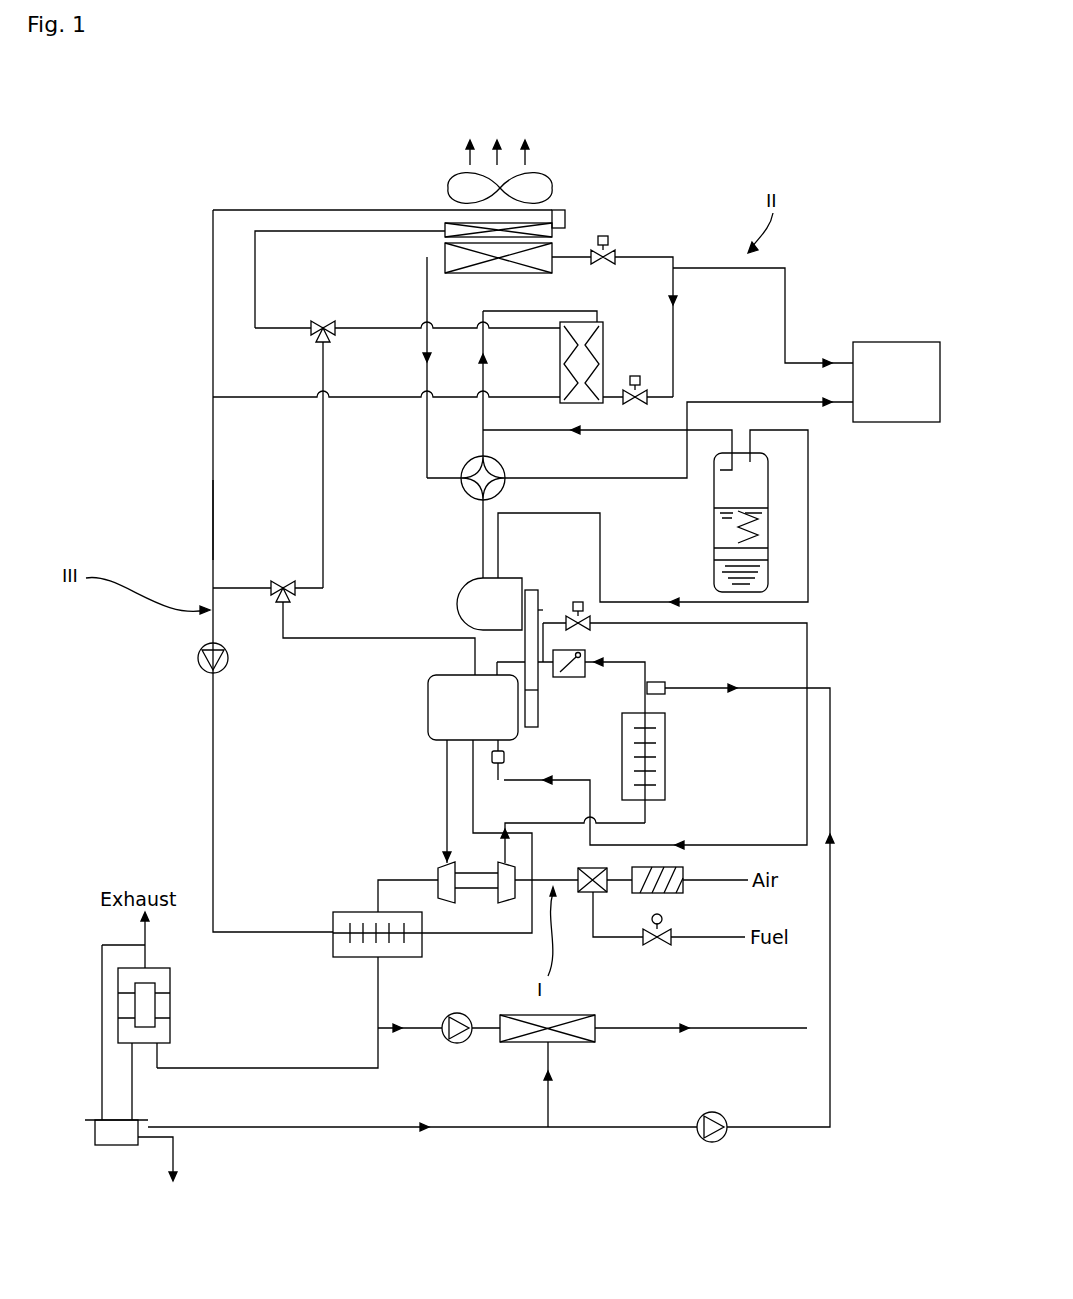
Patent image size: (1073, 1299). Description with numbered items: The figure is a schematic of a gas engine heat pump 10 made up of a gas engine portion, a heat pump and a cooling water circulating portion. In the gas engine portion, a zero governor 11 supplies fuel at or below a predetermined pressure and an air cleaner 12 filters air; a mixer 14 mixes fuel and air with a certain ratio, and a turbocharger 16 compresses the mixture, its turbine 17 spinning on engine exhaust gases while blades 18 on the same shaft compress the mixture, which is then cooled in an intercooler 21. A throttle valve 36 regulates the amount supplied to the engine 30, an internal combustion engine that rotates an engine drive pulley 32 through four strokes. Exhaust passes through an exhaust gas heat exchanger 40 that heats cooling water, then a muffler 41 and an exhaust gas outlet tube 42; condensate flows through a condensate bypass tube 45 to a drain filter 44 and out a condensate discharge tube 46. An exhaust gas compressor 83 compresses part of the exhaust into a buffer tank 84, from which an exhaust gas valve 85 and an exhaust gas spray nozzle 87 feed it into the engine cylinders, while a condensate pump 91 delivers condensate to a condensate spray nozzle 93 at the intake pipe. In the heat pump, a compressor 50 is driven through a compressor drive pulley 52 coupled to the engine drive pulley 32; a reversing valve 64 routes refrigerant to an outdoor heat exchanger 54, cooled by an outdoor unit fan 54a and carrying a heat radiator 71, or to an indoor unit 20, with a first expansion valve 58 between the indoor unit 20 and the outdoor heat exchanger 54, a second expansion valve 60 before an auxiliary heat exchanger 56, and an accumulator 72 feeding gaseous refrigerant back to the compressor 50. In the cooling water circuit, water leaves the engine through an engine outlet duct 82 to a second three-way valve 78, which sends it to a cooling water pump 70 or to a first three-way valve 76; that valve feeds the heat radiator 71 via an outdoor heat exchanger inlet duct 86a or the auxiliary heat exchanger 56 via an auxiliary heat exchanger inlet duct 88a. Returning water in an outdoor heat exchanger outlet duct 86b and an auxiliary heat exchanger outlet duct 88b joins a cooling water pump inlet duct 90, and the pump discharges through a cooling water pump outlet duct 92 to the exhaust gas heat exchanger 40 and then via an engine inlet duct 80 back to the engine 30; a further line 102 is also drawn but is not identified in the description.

The gas engine heat pump 10 is at (138, 91).
The zero governor 11 is at (656, 946).
The air cleaner 12 is at (683, 867).
The mixer 14 is at (596, 894).
The turbocharger 16 is at (490, 898).
The turbine 17 is at (440, 866).
The blades 18 is at (515, 867).
The indoor unit 20 is at (910, 342).
The intercooler 21 is at (666, 757).
The engine 30 is at (464, 727).
The engine drive pulley 32 is at (539, 706).
The throttle valve 36 is at (586, 656).
The exhaust gas heat exchanger 40 is at (347, 912).
The muffler 41 is at (171, 1003).
The exhaust gas outlet tube 42 is at (148, 940).
The drain filter 44 is at (95, 1137).
The condensate bypass tube 45 is at (102, 1018).
The condensate discharge tube 46 is at (173, 1158).
The compressor 50 is at (457, 607).
The compressor drive pulley 52 is at (532, 589).
The outdoor heat exchanger 54 is at (553, 246).
The outdoor unit fan 54a is at (548, 188).
The auxiliary heat exchanger 56 is at (604, 350).
The first expansion valve 58 is at (609, 243).
The second expansion valve 60 is at (636, 405).
The reversing valve 64 is at (470, 498).
The cooling water pump 70 is at (198, 658).
The heat radiator 71 is at (565, 212).
The accumulator 72 is at (768, 490).
The first three-way valve 76 is at (325, 320).
The second three-way valve 78 is at (297, 593).
The engine inlet duct 80 is at (481, 896).
The engine outlet duct 82 is at (335, 639).
The exhaust gas compressor 83 is at (465, 1043).
The buffer tank 84 is at (324, 510).
The exhaust gas valve 85 is at (240, 587).
The outdoor heat exchanger inlet duct 86a is at (300, 231).
The outdoor heat exchanger outlet duct 86b is at (305, 209).
The exhaust gas spray nozzle 87 is at (505, 757).
The auxiliary heat exchanger inlet duct 88a is at (380, 329).
The auxiliary heat exchanger outlet duct 88b is at (380, 398).
The cooling water pump inlet duct 90 is at (213, 522).
The condensate pump 91 is at (722, 1141).
The cooling water pump outlet duct 92 is at (214, 712).
The condensate spray nozzle 93 is at (661, 682).
The supply line 102 is at (214, 453).